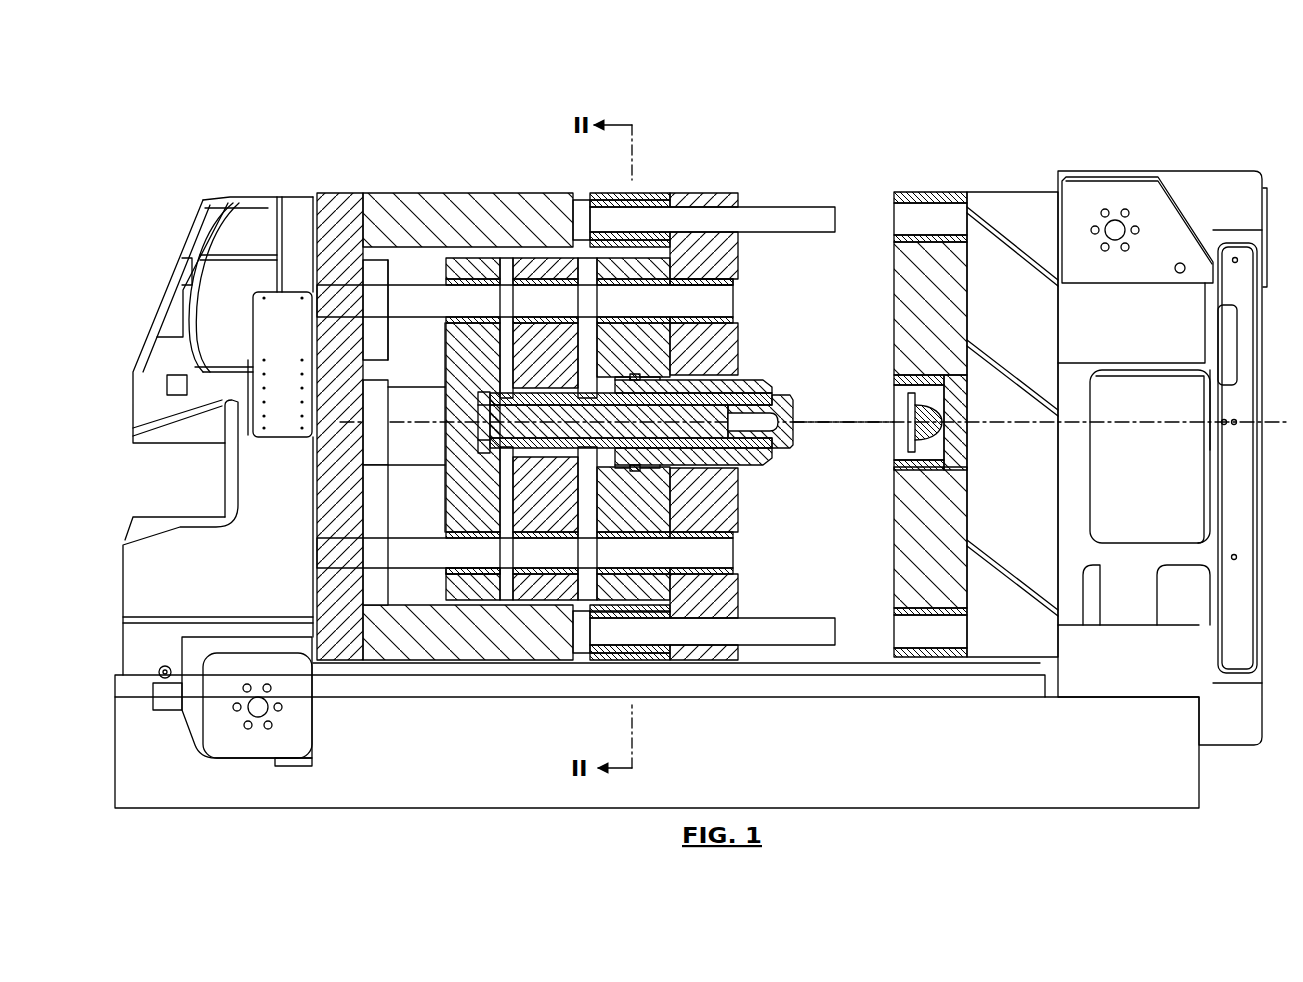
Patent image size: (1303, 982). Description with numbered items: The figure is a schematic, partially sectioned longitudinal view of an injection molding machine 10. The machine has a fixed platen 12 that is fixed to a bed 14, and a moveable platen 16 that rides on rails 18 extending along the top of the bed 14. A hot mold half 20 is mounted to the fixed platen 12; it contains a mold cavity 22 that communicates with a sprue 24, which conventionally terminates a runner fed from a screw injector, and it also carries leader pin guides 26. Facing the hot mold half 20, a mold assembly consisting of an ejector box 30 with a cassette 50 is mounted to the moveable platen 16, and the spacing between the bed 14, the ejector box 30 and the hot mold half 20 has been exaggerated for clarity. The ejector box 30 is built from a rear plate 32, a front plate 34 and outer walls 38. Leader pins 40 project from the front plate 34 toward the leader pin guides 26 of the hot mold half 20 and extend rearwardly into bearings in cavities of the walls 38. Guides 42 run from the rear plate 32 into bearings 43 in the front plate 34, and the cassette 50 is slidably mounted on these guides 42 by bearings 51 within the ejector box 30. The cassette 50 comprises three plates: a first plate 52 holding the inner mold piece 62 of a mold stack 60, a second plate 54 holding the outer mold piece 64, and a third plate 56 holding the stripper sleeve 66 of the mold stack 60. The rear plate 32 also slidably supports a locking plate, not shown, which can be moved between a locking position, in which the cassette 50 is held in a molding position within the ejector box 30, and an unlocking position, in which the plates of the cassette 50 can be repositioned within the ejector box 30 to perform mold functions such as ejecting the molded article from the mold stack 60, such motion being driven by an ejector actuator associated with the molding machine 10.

The injection molding machine 10 is at (910, 105).
The fixed platen 12 is at (1112, 177).
The bed 14 is at (1200, 785).
The moveable platen 16 is at (255, 195).
The rails 18 is at (838, 680).
The hot mold half 20 is at (955, 192).
The mold cavity 22 is at (868, 441).
The sprue 24 is at (905, 390).
The leader pin guides 26 is at (890, 218).
The ejector box 30 is at (523, 172).
The rear plate 32 is at (320, 192).
The front plate 34 is at (707, 192).
The outer walls 38 is at (418, 192).
The leader pins 40 is at (790, 207).
The guides 42 is at (412, 538).
The bearings 43 is at (735, 283).
The cassette 50 is at (437, 262).
The bearings 51 is at (447, 573).
The first plate 52 is at (503, 193).
The second plate 54 is at (563, 193).
The third plate 56 is at (625, 193).
The mold stack 60 is at (810, 345).
The inner mold piece 62 is at (797, 412).
The outer mold piece 64 is at (742, 465).
The stripper sleeve 66 is at (750, 380).